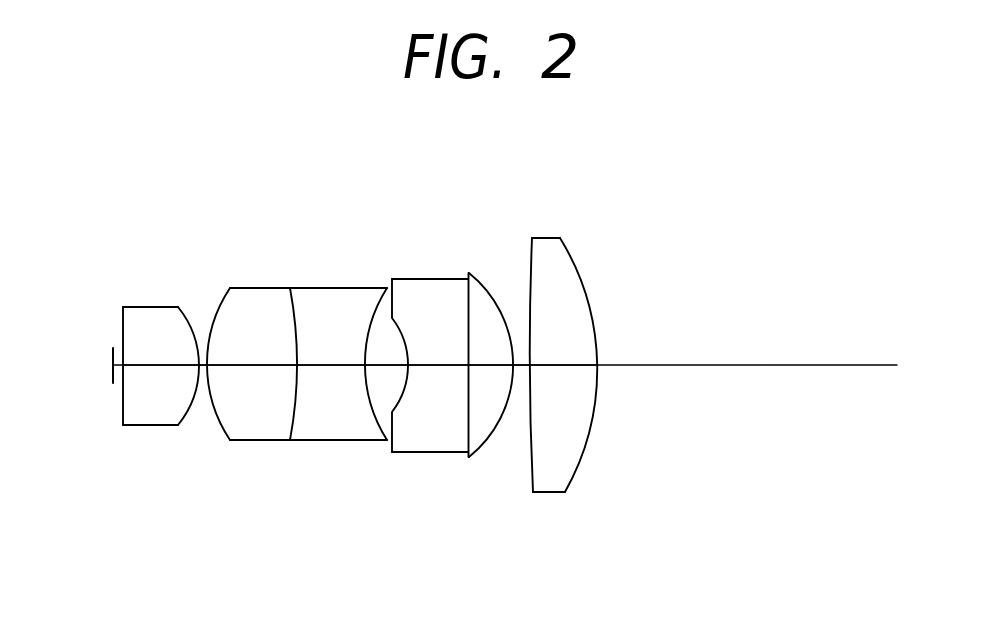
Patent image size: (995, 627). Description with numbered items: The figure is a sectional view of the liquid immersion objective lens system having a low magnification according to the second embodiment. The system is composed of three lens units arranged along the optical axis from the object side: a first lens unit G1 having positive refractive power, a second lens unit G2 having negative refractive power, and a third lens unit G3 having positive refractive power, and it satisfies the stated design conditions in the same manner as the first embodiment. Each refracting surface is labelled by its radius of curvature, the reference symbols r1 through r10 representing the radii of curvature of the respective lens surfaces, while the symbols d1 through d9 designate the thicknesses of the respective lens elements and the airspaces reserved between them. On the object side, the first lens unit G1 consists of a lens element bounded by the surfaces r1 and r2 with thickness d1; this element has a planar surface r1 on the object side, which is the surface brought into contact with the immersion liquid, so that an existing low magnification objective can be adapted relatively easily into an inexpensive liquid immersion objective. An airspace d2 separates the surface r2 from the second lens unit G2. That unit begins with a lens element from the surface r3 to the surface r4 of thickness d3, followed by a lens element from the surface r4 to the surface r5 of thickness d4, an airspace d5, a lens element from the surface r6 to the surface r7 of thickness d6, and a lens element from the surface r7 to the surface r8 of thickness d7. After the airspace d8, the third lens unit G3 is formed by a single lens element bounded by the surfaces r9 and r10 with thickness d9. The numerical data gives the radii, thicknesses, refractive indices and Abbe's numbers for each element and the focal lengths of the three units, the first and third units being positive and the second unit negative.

The first lens surface r1 is at (122, 331).
The second lens surface r2 is at (177, 309).
The third lens surface r3 is at (221, 308).
The fourth lens surface r4 is at (294, 316).
The fifth lens surface r5 is at (374, 318).
The sixth lens surface r6 is at (406, 332).
The seventh lens surface r7 is at (468, 311).
The eighth lens surface r8 is at (491, 322).
The ninth lens surface r9 is at (528, 289).
The tenth lens surface r10 is at (579, 321).
The thickness of first lens element d1 is at (143, 365).
The airspace d2 is at (202, 365).
The thickness of lens element d3 is at (253, 365).
The thickness of lens element d4 is at (322, 365).
The airspace d5 is at (382, 365).
The thickness of lens element d6 is at (427, 365).
The thickness of lens element d7 is at (487, 365).
The airspace d8 is at (517, 365).
The thickness of lens element d9 is at (567, 365).
The first lens unit G1 is at (148, 391).
The second lens unit G2 is at (358, 381).
The third lens unit G3 is at (558, 370).